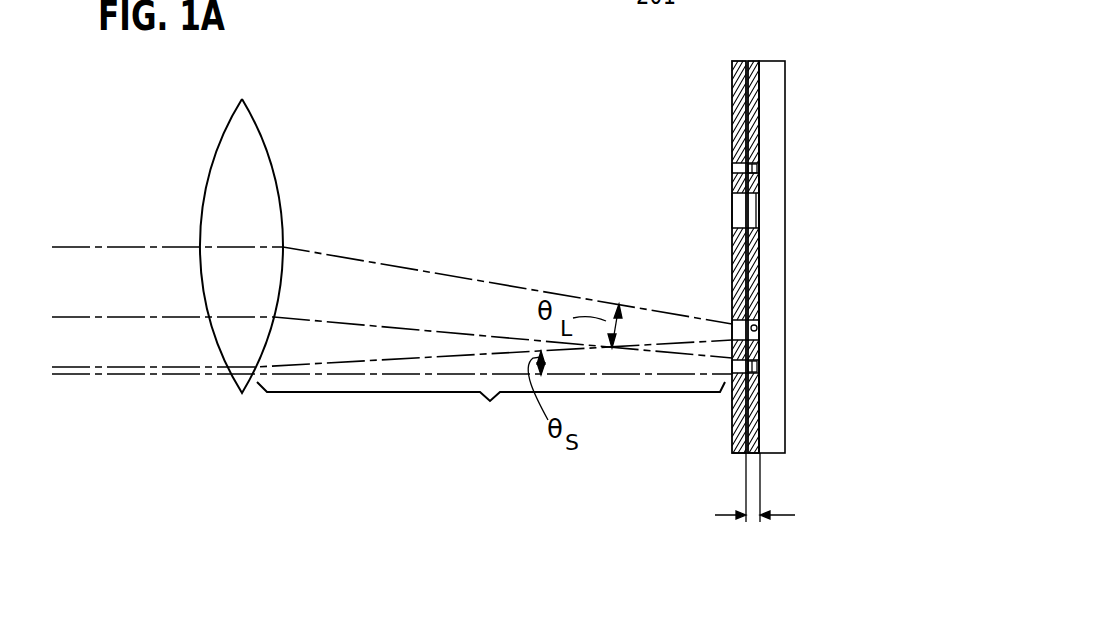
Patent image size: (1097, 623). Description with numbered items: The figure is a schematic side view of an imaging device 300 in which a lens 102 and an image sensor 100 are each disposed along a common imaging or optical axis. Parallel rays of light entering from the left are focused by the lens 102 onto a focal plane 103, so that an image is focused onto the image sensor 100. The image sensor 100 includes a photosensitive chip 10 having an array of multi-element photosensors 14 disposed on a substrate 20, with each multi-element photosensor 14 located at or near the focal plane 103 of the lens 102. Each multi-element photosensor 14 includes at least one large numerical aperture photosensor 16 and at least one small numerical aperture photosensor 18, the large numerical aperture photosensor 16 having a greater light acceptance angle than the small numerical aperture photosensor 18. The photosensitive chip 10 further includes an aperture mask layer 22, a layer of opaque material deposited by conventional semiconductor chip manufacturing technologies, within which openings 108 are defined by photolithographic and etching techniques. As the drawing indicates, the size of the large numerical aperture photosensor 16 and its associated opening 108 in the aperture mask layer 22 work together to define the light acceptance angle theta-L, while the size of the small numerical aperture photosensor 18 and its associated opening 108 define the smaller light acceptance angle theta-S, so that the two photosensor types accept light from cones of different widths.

The lens 102 is at (223, 128).
The imaging device 300 is at (491, 407).
The photosensitive chip 10 is at (785, 343).
The multi-element photosensor 14 is at (712, 148).
The large numerical aperture photosensor 16 is at (755, 210).
The small numerical aperture photosensor 18 is at (753, 169).
The substrate 20 is at (786, 436).
The aperture mask layer 22 is at (737, 456).
The image sensor 100 is at (777, 466).
The focal plane 103 is at (755, 503).
The opening 108 is at (734, 166).